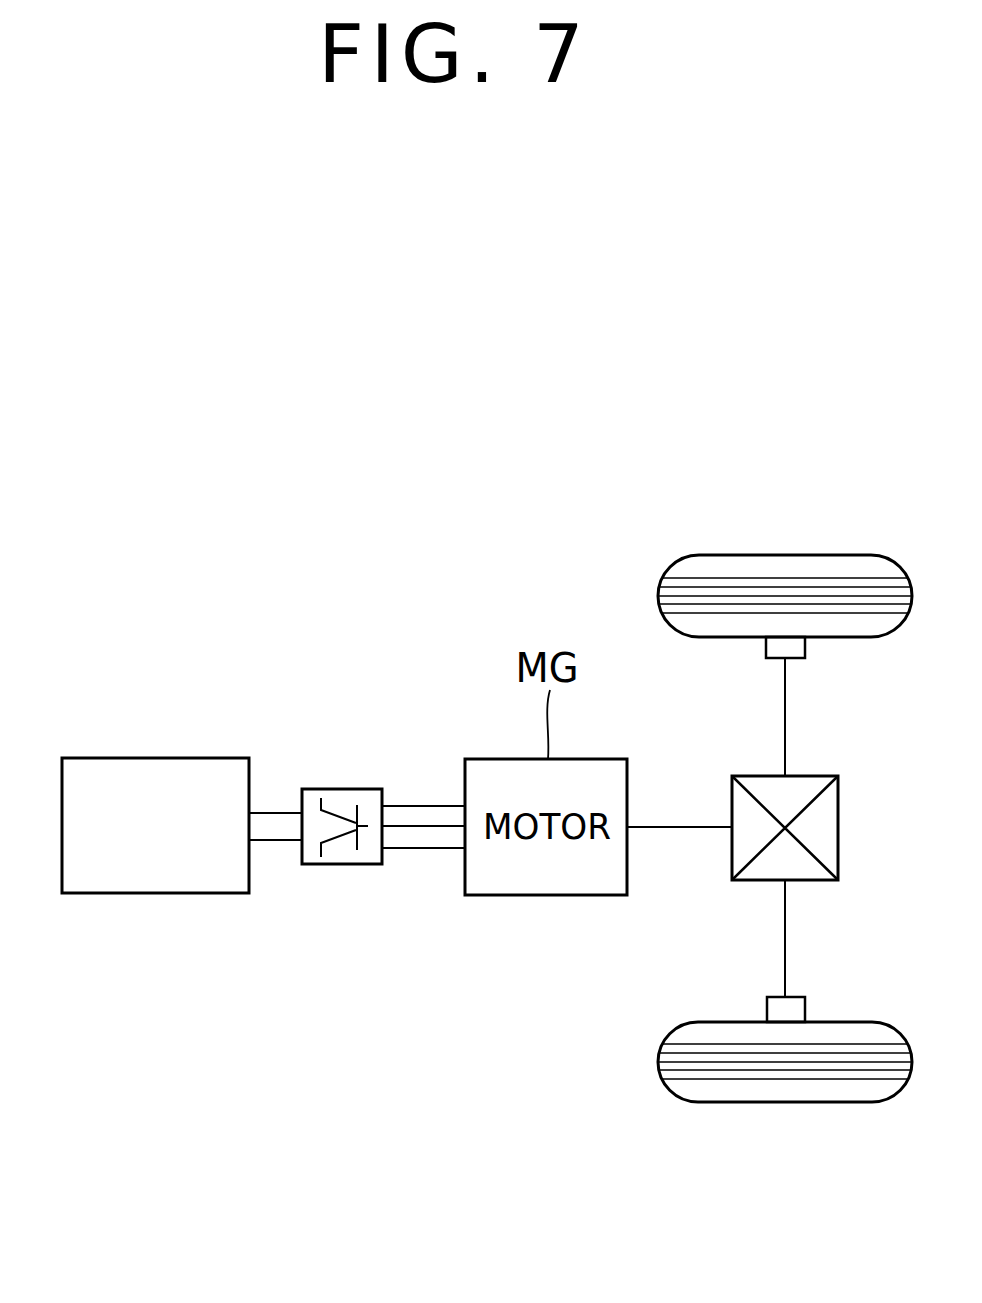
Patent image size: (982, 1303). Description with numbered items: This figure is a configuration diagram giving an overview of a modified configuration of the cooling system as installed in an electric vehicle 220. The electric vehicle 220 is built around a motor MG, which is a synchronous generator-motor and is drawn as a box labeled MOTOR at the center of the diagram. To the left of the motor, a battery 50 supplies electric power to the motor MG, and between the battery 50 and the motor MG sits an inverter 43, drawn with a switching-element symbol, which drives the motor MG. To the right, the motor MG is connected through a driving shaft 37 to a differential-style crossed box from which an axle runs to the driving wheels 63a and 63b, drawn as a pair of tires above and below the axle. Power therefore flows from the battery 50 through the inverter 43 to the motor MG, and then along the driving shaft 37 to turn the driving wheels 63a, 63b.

The electric vehicle 220 is at (452, 515).
The battery 50 is at (156, 758).
The inverter 43 is at (343, 789).
The driving shaft 37 is at (681, 827).
The driving wheel 63a is at (785, 555).
The driving wheel 63b is at (785, 1102).